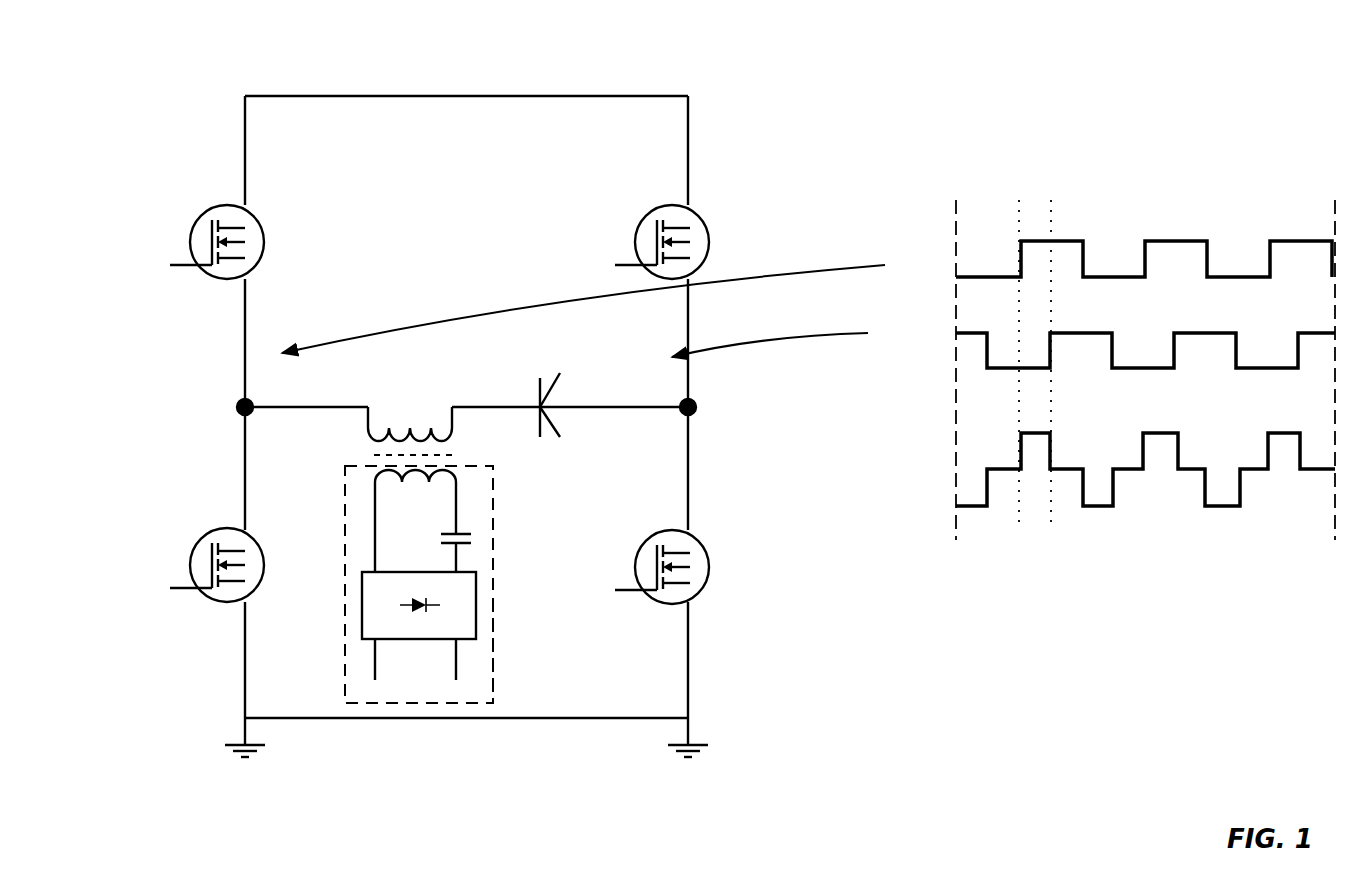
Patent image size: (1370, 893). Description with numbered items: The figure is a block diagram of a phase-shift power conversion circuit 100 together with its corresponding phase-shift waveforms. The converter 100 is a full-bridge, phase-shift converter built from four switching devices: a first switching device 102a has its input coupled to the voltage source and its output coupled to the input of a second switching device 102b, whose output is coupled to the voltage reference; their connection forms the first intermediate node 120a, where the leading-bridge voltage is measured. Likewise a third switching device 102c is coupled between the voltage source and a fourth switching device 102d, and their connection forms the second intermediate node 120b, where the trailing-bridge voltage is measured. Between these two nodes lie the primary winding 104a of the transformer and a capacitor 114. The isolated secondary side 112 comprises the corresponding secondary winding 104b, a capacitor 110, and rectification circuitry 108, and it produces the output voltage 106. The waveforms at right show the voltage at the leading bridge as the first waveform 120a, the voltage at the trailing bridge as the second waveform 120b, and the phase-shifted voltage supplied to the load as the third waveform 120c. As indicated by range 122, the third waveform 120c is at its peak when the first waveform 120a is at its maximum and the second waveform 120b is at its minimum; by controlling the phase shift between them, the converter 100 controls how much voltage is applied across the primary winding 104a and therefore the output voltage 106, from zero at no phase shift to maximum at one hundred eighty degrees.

The phase-shift power conversion circuit 100 is at (268, 70).
The first switching device 102a is at (228, 198).
The second switching device 102b is at (196, 602).
The third switching device 102c is at (731, 190).
The fourth switching device 102d is at (708, 582).
The primary winding of the transformer 104a is at (437, 408).
The secondary winding of the transformer 104b is at (425, 510).
The output voltage Vout 106 is at (415, 703).
The rectification circuitry 108 is at (479, 589).
The capacitor 110 is at (470, 540).
The secondary side 112 is at (493, 637).
The capacitor 114 is at (548, 374).
The first intermediate node PH 120a is at (241, 393).
The second intermediate node PH1 120b is at (696, 399).
The phase-shifted voltage PH-PH1 120c is at (903, 476).
The range 122 is at (1036, 198).